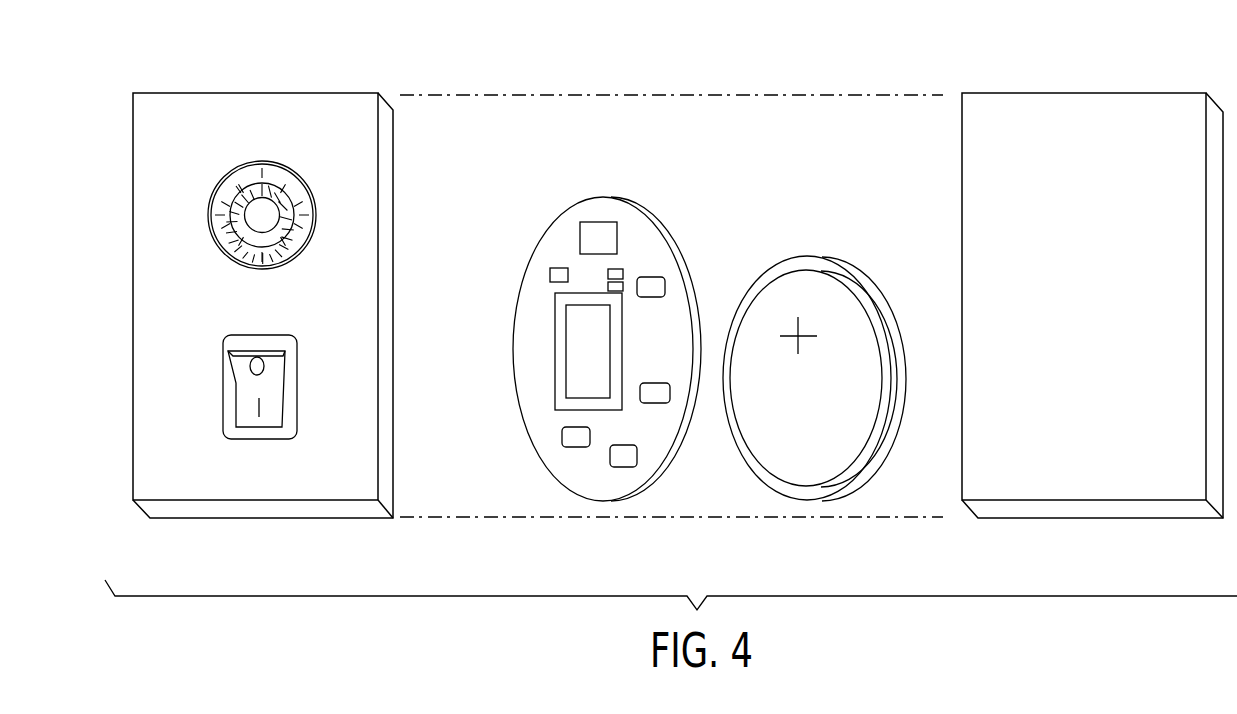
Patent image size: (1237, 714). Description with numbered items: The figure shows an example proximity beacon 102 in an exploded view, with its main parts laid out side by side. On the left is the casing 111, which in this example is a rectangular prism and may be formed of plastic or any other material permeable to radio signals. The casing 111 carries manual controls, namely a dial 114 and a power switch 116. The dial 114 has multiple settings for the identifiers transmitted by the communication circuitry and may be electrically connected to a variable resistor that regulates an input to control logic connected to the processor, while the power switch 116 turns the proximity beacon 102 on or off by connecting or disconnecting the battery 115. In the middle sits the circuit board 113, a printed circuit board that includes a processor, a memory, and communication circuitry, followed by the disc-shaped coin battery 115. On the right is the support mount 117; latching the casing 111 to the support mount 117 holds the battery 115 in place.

The proximity beacon 102 is at (95, 70).
The casing 111 is at (133, 433).
The circuit board 113 is at (577, 462).
The dial 114 is at (232, 194).
The battery 115 is at (753, 422).
The power switch 116 is at (262, 352).
The support mount 117 is at (1070, 470).